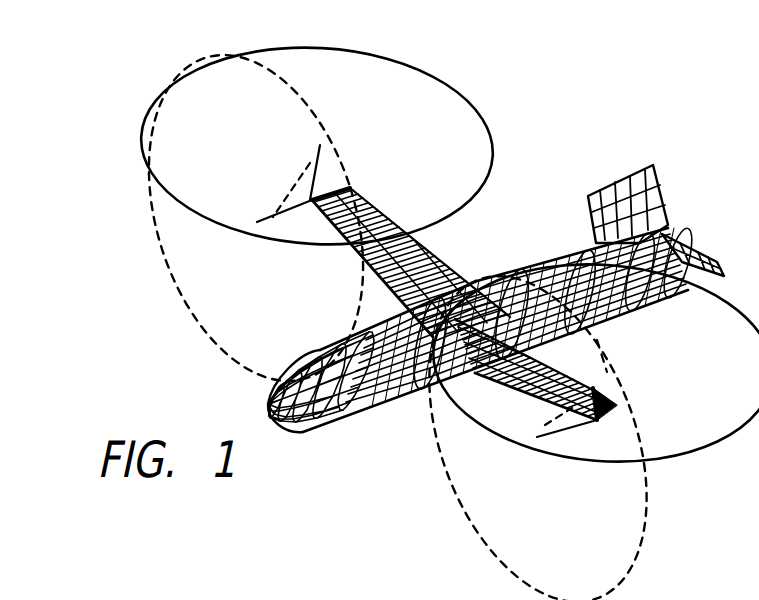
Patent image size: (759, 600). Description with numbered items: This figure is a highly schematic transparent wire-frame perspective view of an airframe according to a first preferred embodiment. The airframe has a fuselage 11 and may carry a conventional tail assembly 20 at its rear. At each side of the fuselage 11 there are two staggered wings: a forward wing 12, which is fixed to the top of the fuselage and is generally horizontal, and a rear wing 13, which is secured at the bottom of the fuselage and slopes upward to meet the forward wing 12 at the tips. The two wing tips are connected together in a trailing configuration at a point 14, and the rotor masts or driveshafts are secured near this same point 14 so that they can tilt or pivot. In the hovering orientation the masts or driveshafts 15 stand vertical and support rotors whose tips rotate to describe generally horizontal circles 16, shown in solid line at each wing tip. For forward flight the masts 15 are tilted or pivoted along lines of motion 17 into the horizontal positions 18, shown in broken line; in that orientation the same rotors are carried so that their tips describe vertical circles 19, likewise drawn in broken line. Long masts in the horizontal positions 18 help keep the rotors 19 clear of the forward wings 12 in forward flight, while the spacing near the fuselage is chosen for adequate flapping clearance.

The fuselage 11 is at (383, 407).
The forward wing 12 is at (350, 263).
The rear wing 13 is at (443, 262).
The tip connection point 14 is at (347, 158).
The rotor masts or driveshafts 15 is at (310, 153).
The horizontal rotor tip circles 16 is at (452, 86).
The lines of motion 17 is at (291, 181).
The horizontal mast positions 18 is at (300, 210).
The vertical rotor tip circles 19 is at (208, 325).
The tail assembly 20 is at (616, 150).